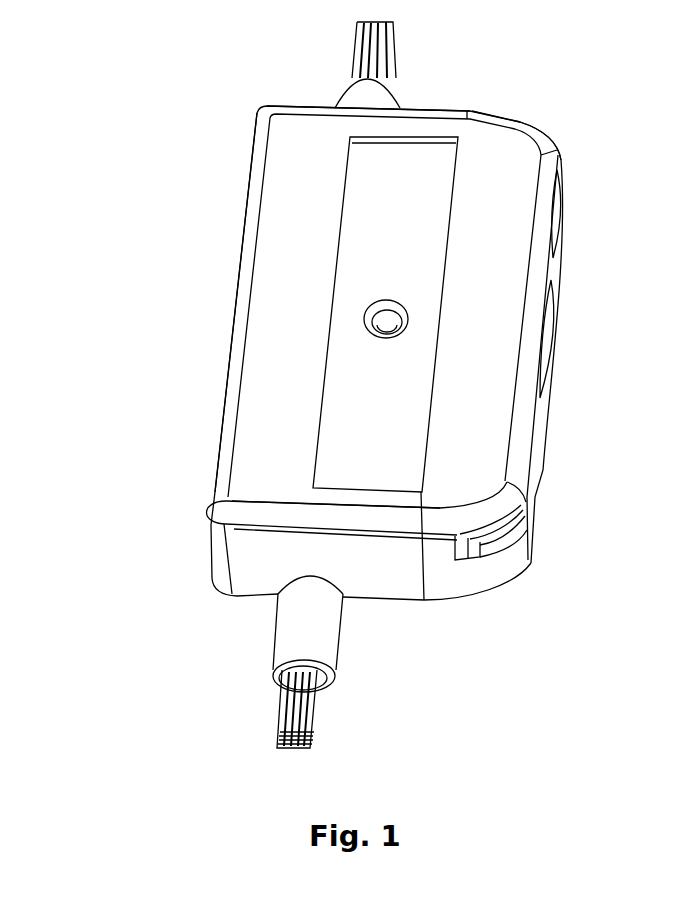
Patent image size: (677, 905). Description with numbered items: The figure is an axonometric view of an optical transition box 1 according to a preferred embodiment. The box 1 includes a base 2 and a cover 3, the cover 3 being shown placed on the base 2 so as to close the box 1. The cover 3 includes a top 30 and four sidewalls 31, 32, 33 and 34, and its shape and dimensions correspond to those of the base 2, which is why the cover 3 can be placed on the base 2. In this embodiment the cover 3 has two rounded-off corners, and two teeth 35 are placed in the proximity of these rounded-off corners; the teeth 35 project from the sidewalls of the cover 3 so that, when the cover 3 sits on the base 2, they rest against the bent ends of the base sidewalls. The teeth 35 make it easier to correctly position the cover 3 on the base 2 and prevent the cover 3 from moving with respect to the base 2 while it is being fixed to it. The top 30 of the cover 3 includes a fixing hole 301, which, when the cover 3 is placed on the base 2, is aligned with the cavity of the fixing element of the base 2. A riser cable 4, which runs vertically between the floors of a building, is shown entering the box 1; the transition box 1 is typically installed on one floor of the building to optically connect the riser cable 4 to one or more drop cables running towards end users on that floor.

The optical transition box 1 is at (358, 384).
The base 2 is at (477, 618).
The cover 3 is at (397, 319).
The top 30 is at (530, 127).
The sidewall 31 is at (296, 107).
The sidewall 32 is at (230, 318).
The sidewall 33 is at (243, 502).
The sidewall 34 is at (542, 368).
The teeth 35 is at (527, 517).
The fixing hole 301 is at (402, 306).
The riser cable 4 is at (275, 648).